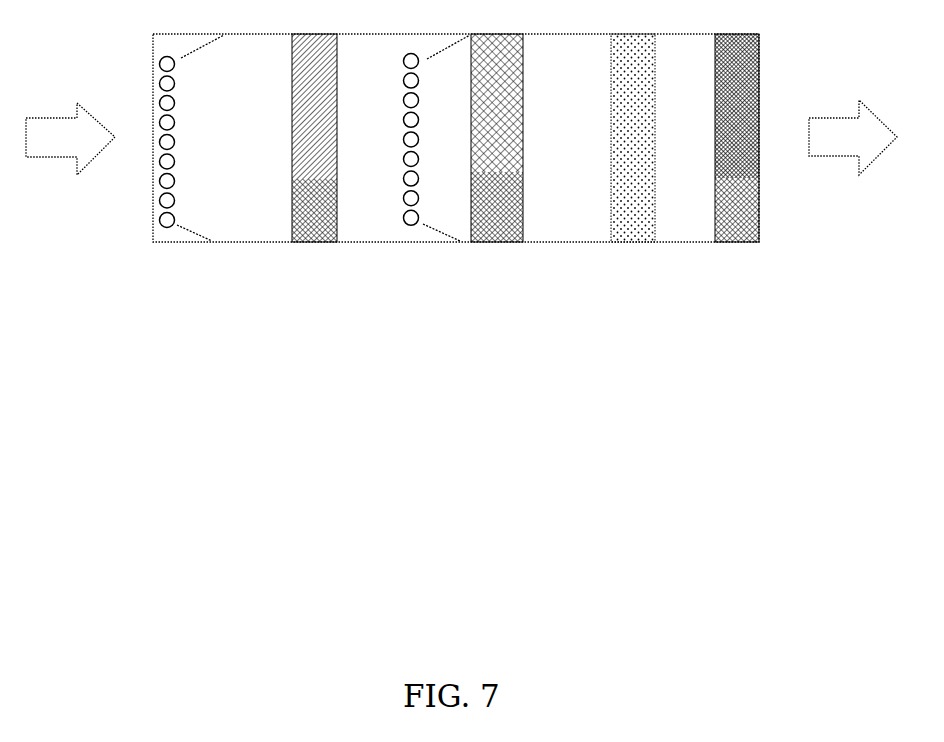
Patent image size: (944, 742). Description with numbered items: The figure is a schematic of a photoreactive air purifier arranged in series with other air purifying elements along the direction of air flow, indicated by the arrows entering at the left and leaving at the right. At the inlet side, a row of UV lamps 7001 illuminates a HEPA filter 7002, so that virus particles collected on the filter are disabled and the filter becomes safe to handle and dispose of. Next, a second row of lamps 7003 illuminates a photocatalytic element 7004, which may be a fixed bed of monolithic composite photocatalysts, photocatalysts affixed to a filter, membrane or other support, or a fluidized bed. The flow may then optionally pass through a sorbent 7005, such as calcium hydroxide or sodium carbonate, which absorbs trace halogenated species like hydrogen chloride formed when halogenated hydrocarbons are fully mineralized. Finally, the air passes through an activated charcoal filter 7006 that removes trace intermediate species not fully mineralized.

The UV lamps 7001 is at (167, 244).
The HEPA filter 7002 is at (316, 258).
The lamps 7003 is at (412, 244).
The photocatalytic element 7004 is at (498, 258).
The sorbent 7005 is at (635, 258).
The activated charcoal filter 7006 is at (738, 258).